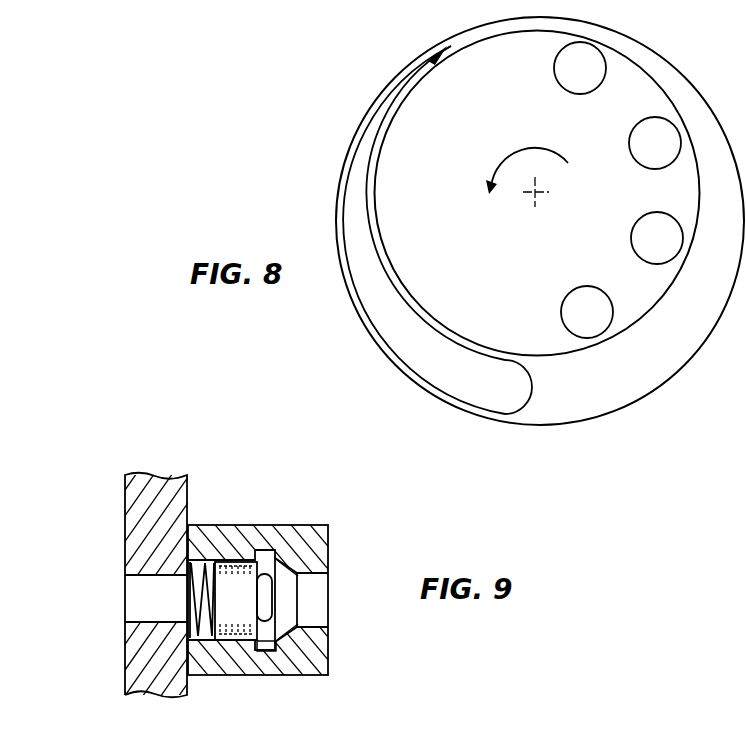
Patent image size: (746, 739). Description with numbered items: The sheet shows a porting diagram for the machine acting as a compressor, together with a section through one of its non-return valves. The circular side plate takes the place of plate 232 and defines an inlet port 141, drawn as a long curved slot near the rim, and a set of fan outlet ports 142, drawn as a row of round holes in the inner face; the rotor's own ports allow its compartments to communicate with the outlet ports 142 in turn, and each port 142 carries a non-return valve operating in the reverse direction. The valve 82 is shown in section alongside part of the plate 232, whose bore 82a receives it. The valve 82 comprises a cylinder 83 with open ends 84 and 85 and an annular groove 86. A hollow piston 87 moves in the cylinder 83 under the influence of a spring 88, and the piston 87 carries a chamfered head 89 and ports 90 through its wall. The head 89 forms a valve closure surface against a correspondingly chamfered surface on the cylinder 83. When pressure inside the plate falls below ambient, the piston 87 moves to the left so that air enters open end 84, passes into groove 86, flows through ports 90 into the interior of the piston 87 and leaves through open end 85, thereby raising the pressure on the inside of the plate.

In FIG. 8, the plate 232 is at (610, 388).
In FIG. 9, the plate 232 is at (135, 519).
In FIG. 8, the inlet port 141 is at (445, 372).
In FIG. 8, the fan outlet ports 142 is at (641, 239).
In FIG. 9, the valve 82 is at (298, 473).
In FIG. 9, the bore in disc 82a is at (132, 613).
In FIG. 9, the cylinder 83 is at (328, 547).
In FIG. 9, the open end 84 is at (318, 584).
In FIG. 9, the open end 85 is at (203, 634).
In FIG. 9, the annular groove 86 is at (266, 646).
In FIG. 9, the hollow piston 87 is at (235, 590).
In FIG. 9, the spring 88 is at (188, 588).
In FIG. 9, the chamfered head 89 is at (300, 627).
In FIG. 9, the ports 90 is at (262, 598).